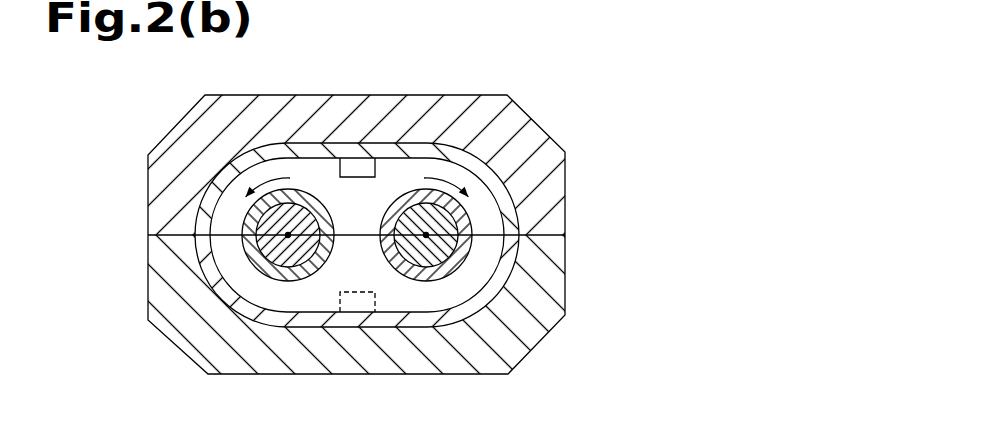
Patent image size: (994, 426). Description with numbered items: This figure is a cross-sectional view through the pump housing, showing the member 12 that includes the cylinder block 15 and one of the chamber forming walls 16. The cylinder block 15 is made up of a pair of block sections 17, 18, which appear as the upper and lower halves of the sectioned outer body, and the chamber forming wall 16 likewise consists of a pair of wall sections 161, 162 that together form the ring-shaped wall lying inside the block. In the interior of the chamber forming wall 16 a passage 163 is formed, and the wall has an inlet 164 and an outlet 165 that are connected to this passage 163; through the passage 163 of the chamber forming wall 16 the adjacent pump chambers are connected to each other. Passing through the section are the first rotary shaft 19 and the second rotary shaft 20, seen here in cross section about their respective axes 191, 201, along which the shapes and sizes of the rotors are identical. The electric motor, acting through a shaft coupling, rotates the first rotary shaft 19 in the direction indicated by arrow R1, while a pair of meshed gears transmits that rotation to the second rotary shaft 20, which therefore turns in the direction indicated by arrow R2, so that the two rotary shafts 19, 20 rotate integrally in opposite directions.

The member 12 is at (507, 95).
The cylinder block 15 is at (409, 235).
The block section 17 is at (557, 249).
The block section 18 is at (557, 214).
The chamber forming wall 16 is at (277, 235).
The wall section 161 is at (207, 225).
The wall section 162 is at (202, 245).
The passage 163 is at (316, 170).
The inlet 164 is at (345, 292).
The outlet 165 is at (350, 158).
The first rotary shaft 19 is at (413, 260).
The axis 191 is at (458, 266).
The second rotary shaft 20 is at (312, 262).
The axis 201 is at (289, 235).
The arrow indicating rotation direction of first rotary shaft R1 is at (445, 175).
The arrow indicating rotation direction of second rotary shaft R2 is at (268, 180).